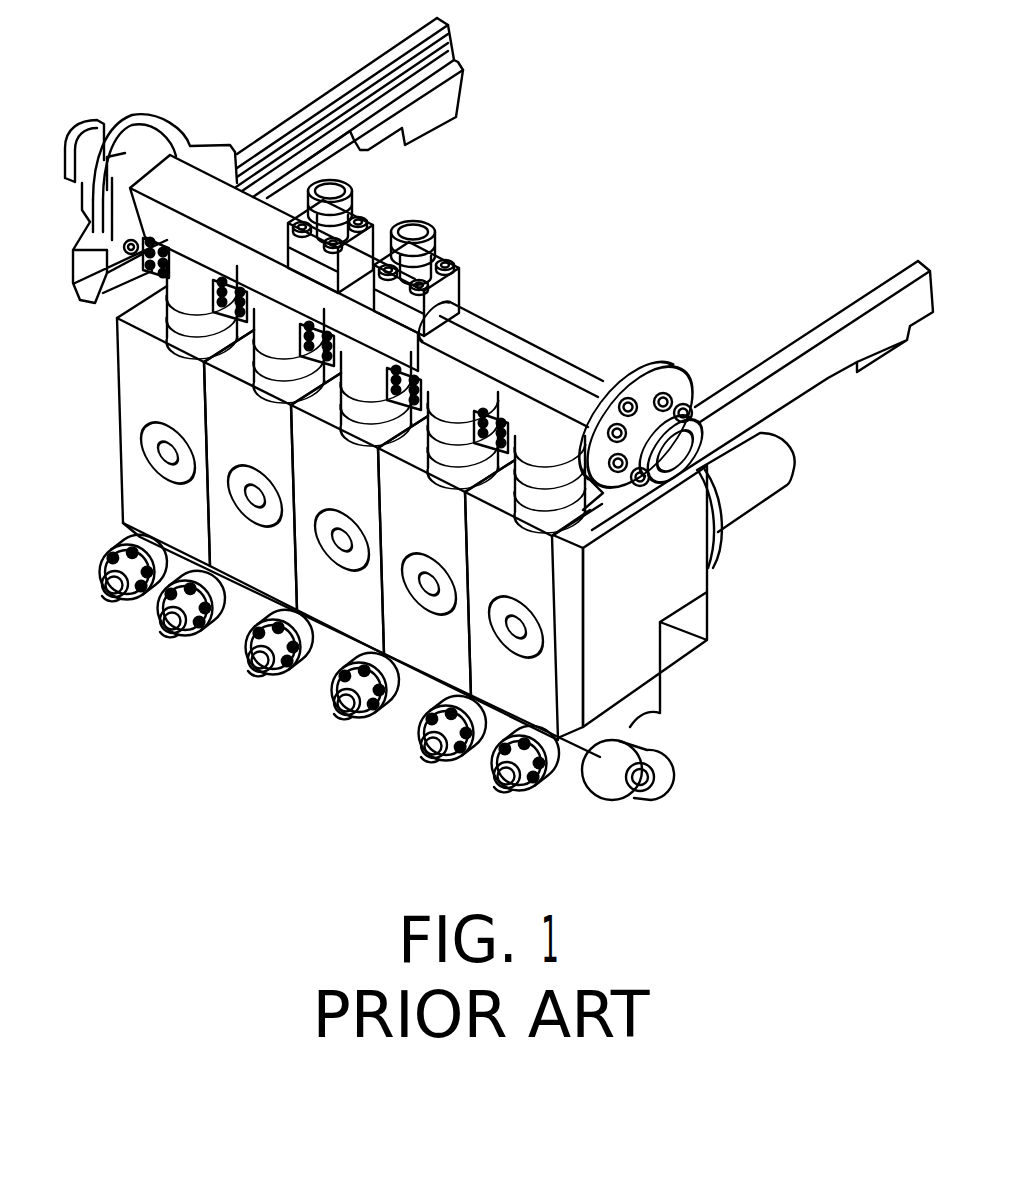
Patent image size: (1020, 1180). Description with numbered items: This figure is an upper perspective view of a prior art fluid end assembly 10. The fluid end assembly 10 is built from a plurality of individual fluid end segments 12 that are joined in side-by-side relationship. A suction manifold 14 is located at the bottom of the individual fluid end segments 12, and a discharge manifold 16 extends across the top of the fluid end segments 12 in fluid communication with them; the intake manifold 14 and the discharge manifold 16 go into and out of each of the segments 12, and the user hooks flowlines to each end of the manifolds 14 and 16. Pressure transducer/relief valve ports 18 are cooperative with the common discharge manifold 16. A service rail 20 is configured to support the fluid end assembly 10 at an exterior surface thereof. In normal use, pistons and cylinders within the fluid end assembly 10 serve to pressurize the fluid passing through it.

The fluid end assembly 10 is at (584, 203).
The fluid end segments 12 is at (643, 660).
The suction manifold 14 is at (417, 703).
The discharge manifold 16 is at (540, 345).
The pressure transducer/relief valve ports 18 is at (352, 181).
The service rail 20 is at (793, 350).